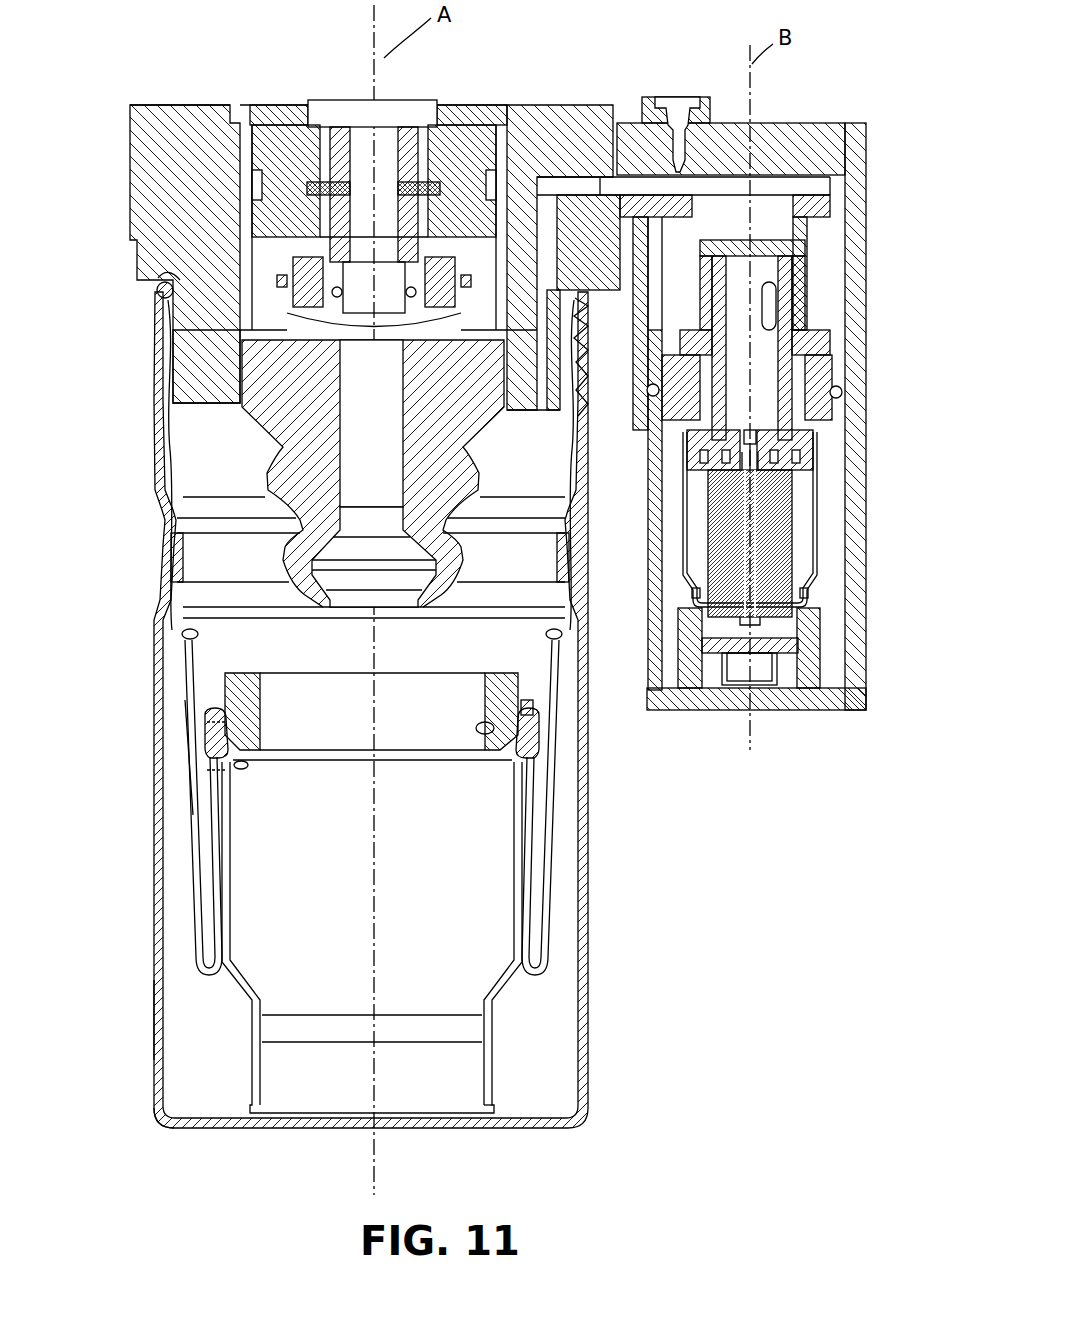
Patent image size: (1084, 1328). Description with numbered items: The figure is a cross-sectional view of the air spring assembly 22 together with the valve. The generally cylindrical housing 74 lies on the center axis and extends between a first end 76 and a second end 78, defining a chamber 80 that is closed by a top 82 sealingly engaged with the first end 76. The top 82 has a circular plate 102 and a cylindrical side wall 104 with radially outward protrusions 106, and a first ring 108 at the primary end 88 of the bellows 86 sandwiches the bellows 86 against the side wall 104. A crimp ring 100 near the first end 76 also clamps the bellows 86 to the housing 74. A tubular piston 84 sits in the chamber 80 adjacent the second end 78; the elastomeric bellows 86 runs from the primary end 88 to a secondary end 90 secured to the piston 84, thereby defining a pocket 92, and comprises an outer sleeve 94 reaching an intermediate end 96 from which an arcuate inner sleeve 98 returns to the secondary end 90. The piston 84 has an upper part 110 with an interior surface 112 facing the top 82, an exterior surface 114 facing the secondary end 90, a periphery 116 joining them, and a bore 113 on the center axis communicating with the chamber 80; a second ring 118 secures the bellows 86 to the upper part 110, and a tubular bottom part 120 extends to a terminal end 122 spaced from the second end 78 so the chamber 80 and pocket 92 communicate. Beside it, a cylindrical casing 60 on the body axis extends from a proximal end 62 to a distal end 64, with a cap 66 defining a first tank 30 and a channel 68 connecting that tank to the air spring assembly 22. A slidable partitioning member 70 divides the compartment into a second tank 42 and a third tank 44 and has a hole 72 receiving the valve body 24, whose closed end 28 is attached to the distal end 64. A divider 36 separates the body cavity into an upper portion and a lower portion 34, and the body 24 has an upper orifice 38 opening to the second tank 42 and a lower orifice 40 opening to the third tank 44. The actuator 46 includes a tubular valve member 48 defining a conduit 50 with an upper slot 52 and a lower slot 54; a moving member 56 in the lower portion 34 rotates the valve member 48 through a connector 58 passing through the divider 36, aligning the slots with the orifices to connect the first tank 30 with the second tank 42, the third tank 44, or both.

The air spring assembly 22 is at (207, 98).
The body 24 is at (812, 533).
The closed end 28 is at (782, 688).
The first tank 30 is at (790, 212).
The lower portion 34 is at (684, 541).
The divider 36 is at (802, 487).
The upper orifice 38 is at (795, 292).
The lower orifice 40 is at (843, 392).
The second tank 42 is at (824, 258).
The third tank 44 is at (834, 536).
The actuator 46 is at (777, 438).
The valve member 48 is at (700, 292).
The conduit 50 is at (718, 244).
The upper slot 52 is at (805, 325).
The lower slot 54 is at (773, 397).
The moving member 56 is at (697, 624).
The connector 58 is at (680, 506).
The casing 60 is at (835, 342).
The proximal end 62 is at (850, 153).
The distal end 64 is at (864, 710).
The cap 66 is at (645, 200).
The channel 68 is at (540, 178).
The partitioning member 70 is at (840, 424).
The hole 72 is at (785, 382).
The housing 74 is at (592, 900).
The first end 76 is at (168, 343).
The second end 78 is at (156, 1128).
The chamber 80 is at (172, 1018).
The top 82 is at (160, 308).
The piston 84 is at (497, 1052).
The bellows 86 is at (177, 753).
The primary end 88 is at (155, 266).
The secondary end 90 is at (230, 762).
The pocket 92 is at (183, 634).
The outer sleeve 94 is at (188, 815).
The intermediate end 96 is at (192, 957).
The inner sleeve 98 is at (219, 910).
The crimp ring 100 is at (170, 550).
The plate 102 is at (185, 104).
The side wall 104 is at (132, 142).
The protrusions 106 is at (232, 402).
The first ring 108 is at (592, 306).
The upper part 110 is at (248, 673).
The interior surface 112 is at (495, 690).
The bore 113 is at (478, 726).
The exterior surface 114 is at (245, 770).
The periphery 116 is at (534, 698).
The second ring 118 is at (540, 736).
The bottom part 120 is at (535, 858).
The terminal end 122 is at (490, 1115).